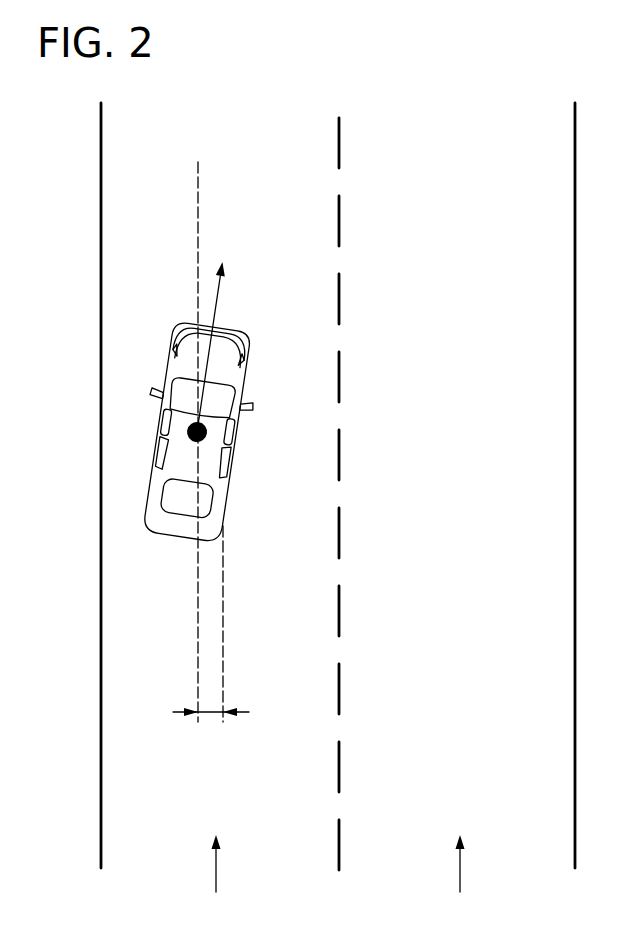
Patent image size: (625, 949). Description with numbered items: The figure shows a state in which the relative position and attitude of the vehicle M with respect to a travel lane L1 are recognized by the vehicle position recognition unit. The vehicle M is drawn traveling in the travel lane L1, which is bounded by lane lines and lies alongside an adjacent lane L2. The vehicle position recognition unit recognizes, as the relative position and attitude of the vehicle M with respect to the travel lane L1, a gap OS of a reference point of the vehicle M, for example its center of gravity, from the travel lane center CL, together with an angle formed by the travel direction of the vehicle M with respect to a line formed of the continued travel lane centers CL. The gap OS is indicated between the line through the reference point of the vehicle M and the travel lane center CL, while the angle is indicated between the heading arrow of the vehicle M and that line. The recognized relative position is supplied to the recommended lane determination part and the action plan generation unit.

The vehicle M is at (157, 450).
The travel lane center CL is at (223, 606).
The gap OS is at (211, 732).
The travel lane L1 is at (233, 929).
The second lane L2 is at (477, 929).